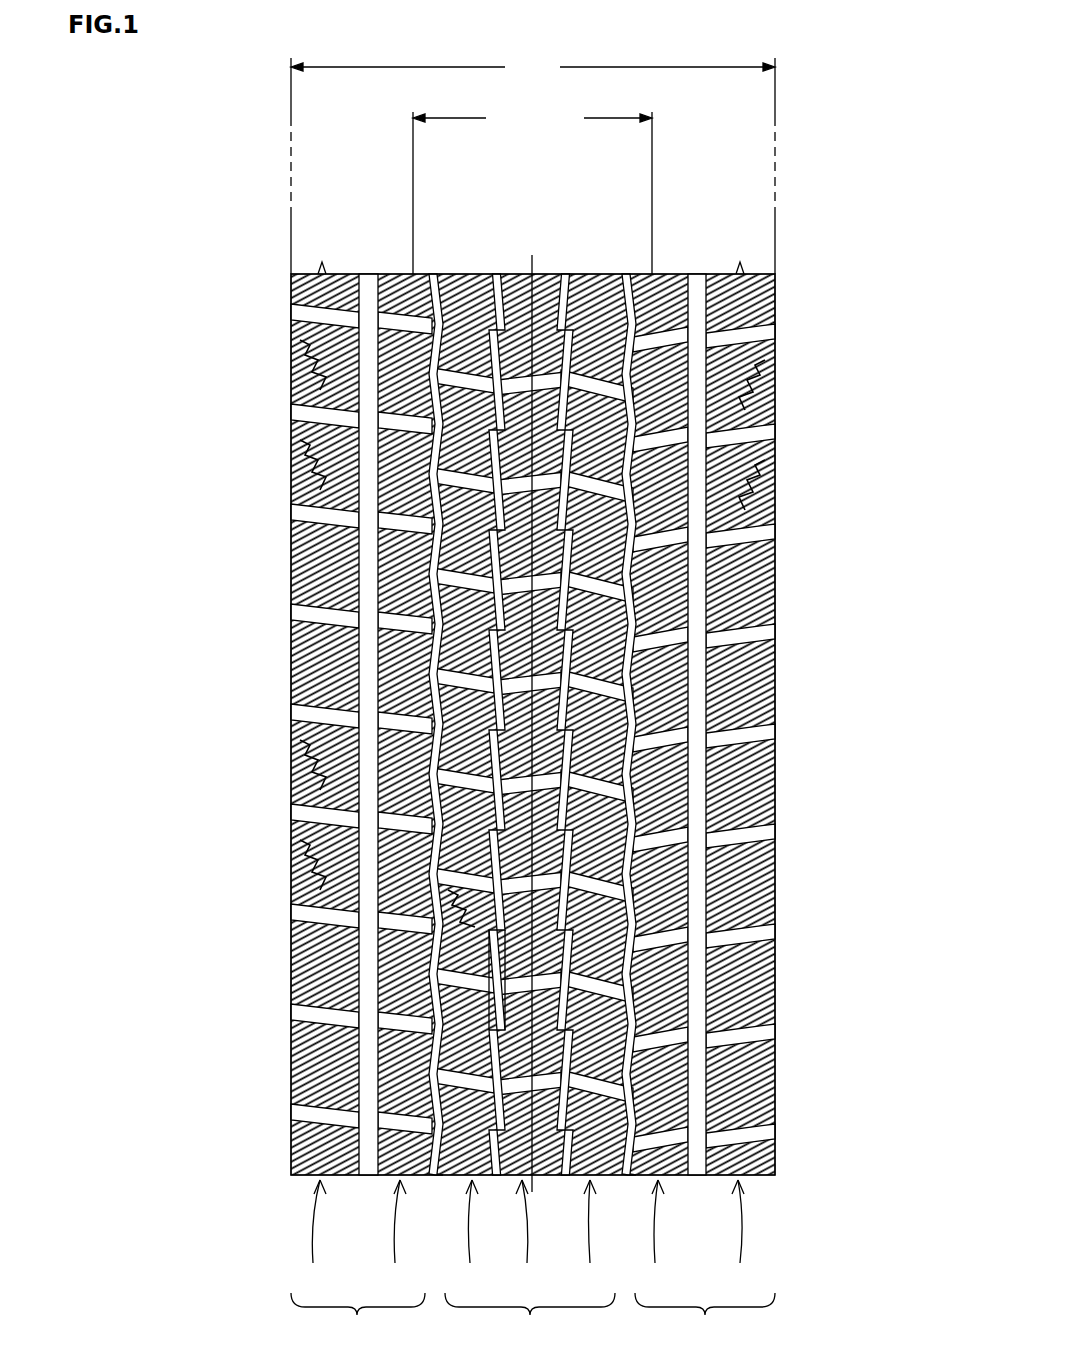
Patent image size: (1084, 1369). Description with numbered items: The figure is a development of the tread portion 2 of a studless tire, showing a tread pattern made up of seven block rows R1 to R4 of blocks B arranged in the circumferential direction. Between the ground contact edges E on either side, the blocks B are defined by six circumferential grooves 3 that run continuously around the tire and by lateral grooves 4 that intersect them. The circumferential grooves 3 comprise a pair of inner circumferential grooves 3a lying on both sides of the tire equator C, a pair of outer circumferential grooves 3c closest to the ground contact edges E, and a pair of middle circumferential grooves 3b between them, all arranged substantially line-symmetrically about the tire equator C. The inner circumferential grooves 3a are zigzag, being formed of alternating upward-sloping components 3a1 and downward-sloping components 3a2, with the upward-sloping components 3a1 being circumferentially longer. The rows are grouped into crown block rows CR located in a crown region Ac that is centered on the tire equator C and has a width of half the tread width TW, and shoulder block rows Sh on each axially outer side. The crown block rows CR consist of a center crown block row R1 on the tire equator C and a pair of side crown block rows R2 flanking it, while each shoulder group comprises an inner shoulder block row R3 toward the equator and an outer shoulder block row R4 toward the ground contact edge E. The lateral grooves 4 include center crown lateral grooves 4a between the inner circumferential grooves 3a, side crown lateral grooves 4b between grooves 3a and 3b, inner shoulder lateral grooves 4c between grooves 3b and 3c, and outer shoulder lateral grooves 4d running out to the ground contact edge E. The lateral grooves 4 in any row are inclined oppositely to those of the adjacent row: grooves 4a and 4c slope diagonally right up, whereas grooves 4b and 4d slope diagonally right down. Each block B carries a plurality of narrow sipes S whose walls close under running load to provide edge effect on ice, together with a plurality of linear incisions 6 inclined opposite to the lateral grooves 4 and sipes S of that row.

The tread portion 2 is at (668, 230).
The circumferential grooves 3 is at (542, 673).
The inner circumferential grooves 3a is at (497, 278).
The middle circumferential grooves 3b is at (436, 278).
The outer circumferential grooves 3c is at (367, 278).
The upward-sloping components 3a1 is at (437, 917).
The downward-sloping components 3a2 is at (437, 960).
The lateral grooves 4 is at (533, 728).
The center crown lateral grooves 4a is at (562, 408).
The side crown lateral grooves 4b is at (325, 521).
The inner shoulder lateral grooves 4c is at (405, 621).
The outer shoulder lateral grooves 4d is at (325, 722).
The incisions 6 is at (300, 776).
The blocks B is at (297, 340).
The sipes S is at (292, 903).
The tire equator C is at (532, 713).
The ground contact edge E is at (291, 165).
The tread width TW is at (533, 70).
The crown region Ac is at (532, 186).
The center crown block row R1 is at (527, 1239).
The side crown block rows R2 is at (530, 1239).
The inner shoulder block row R3 is at (526, 1239).
The outer shoulder block row R4 is at (528, 1239).
The shoulder block rows Sh is at (533, 1320).
The crown block rows CR is at (530, 1320).